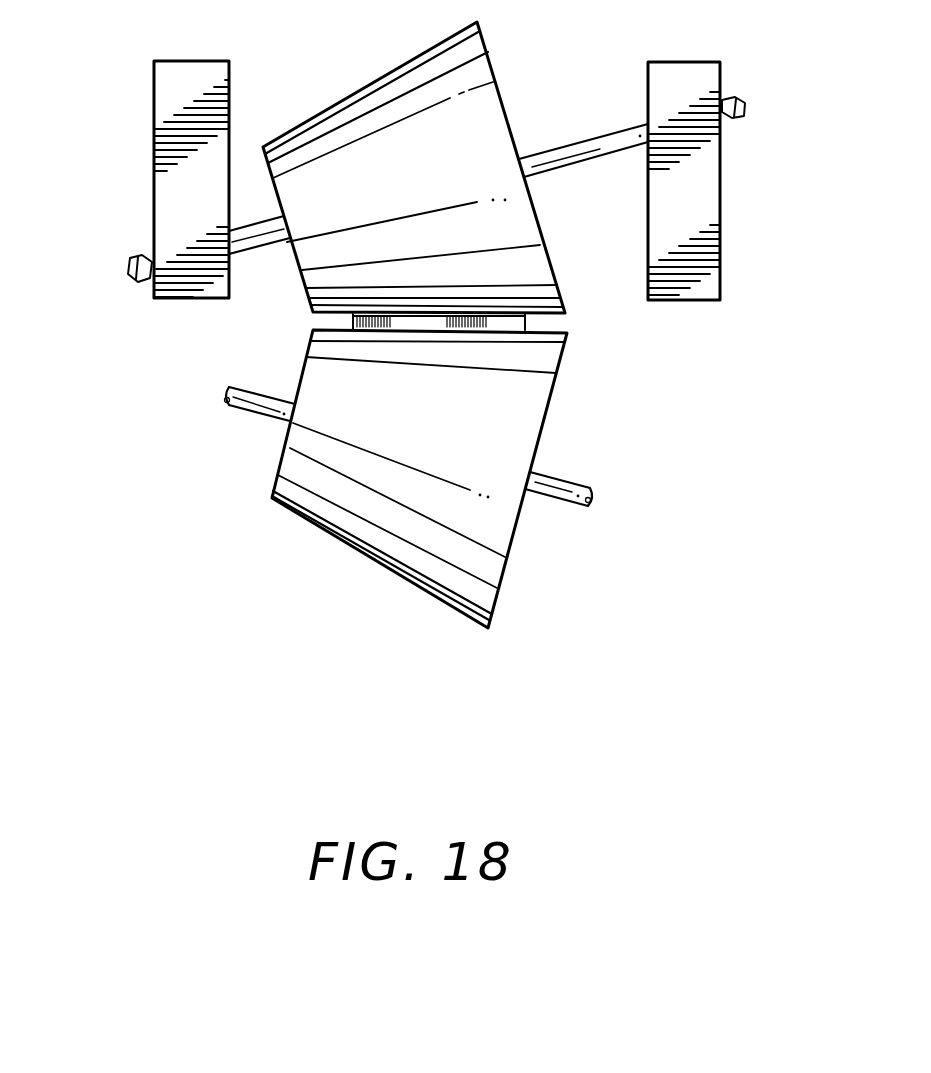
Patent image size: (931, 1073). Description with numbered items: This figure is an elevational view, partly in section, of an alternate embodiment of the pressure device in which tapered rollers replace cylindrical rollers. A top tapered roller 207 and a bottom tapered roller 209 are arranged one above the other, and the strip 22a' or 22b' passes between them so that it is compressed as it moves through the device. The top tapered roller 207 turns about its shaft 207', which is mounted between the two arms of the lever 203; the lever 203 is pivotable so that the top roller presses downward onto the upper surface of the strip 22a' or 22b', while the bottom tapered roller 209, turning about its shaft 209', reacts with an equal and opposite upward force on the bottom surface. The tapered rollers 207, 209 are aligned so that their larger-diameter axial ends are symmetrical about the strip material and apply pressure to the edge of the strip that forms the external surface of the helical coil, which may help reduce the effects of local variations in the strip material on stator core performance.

The lever 203 is at (183, 193).
The top tapered roller 207 is at (398, 159).
The shaft of top tapered roller 207' is at (583, 128).
The strip 22a' is at (373, 322).
The strip 22b' is at (466, 322).
The bottom tapered roller 209 is at (399, 492).
The shaft of bottom tapered roller 209' is at (582, 466).